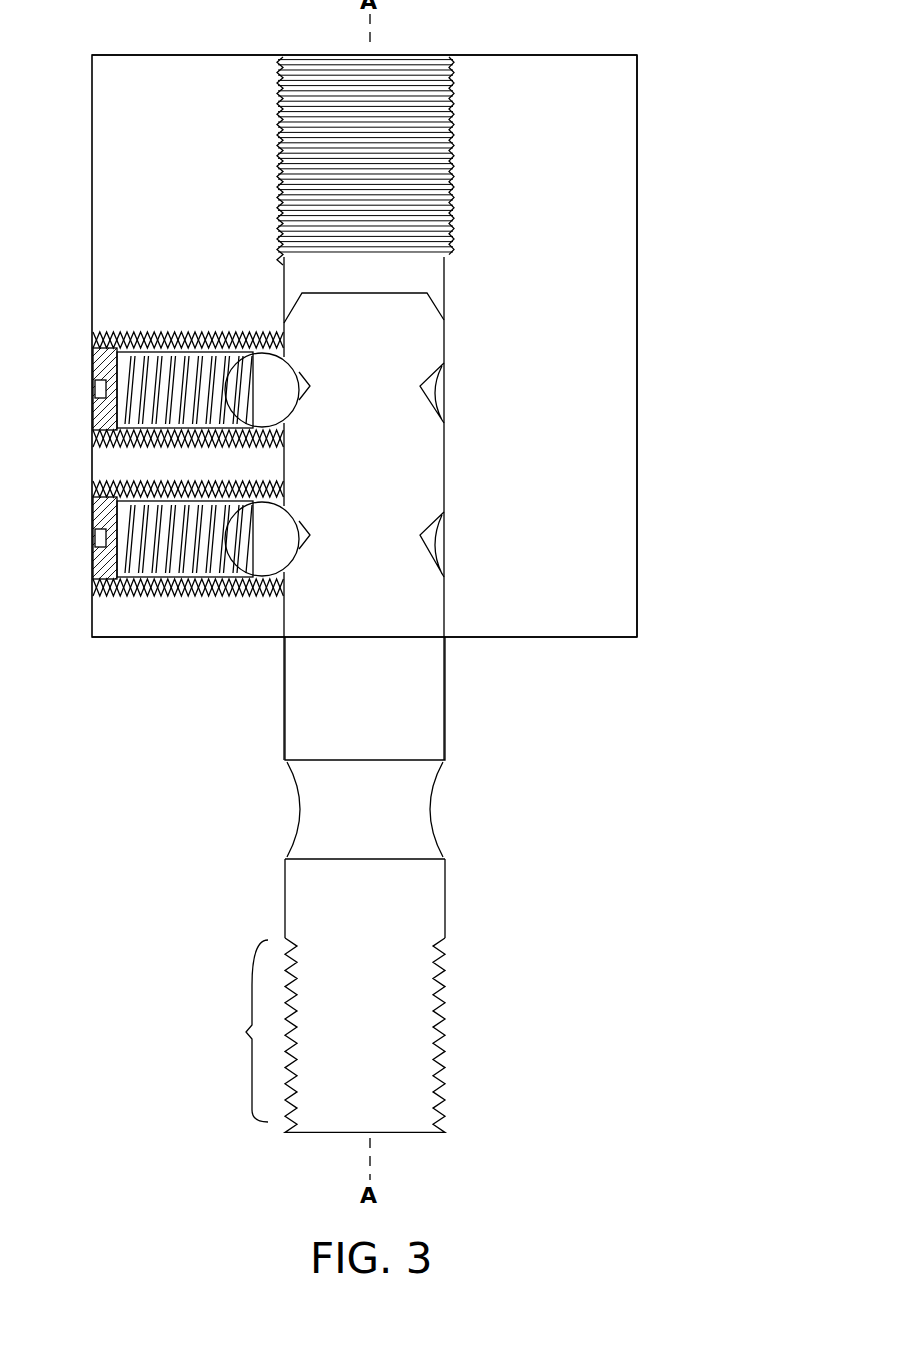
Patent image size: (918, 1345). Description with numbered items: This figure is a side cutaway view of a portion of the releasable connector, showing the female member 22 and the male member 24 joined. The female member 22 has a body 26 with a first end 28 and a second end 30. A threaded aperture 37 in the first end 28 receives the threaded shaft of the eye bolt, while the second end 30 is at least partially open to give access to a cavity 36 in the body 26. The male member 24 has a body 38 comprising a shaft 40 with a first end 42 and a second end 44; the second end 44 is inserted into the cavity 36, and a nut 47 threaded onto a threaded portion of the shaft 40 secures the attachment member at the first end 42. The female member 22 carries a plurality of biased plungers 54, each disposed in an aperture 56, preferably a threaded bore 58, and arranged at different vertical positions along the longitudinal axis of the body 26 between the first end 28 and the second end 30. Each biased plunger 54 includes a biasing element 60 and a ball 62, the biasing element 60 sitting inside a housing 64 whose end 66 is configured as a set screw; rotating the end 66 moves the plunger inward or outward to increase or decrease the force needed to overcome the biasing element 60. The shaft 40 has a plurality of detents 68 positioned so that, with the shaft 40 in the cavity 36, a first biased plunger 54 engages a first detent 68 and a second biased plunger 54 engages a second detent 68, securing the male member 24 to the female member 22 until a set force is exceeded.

The female member 22 is at (620, 197).
The male member 24 is at (445, 893).
The body 26 is at (637, 590).
The first end 28 is at (597, 55).
The second end 30 is at (535, 640).
The cavity 36 is at (375, 392).
The threaded aperture 37 is at (455, 72).
The body 38 is at (283, 733).
The shaft 40 is at (417, 673).
The first end 42 is at (418, 1002).
The second end 44 is at (433, 347).
The nut 47 is at (242, 1031).
The biased plunger 54 is at (160, 358).
The aperture 56 is at (255, 597).
The threaded bore 58 is at (190, 337).
The biasing element 60 is at (93, 580).
The ball 62 is at (272, 557).
The housing 64 is at (147, 597).
The end 66 is at (97, 558).
The detent 68 is at (303, 523).